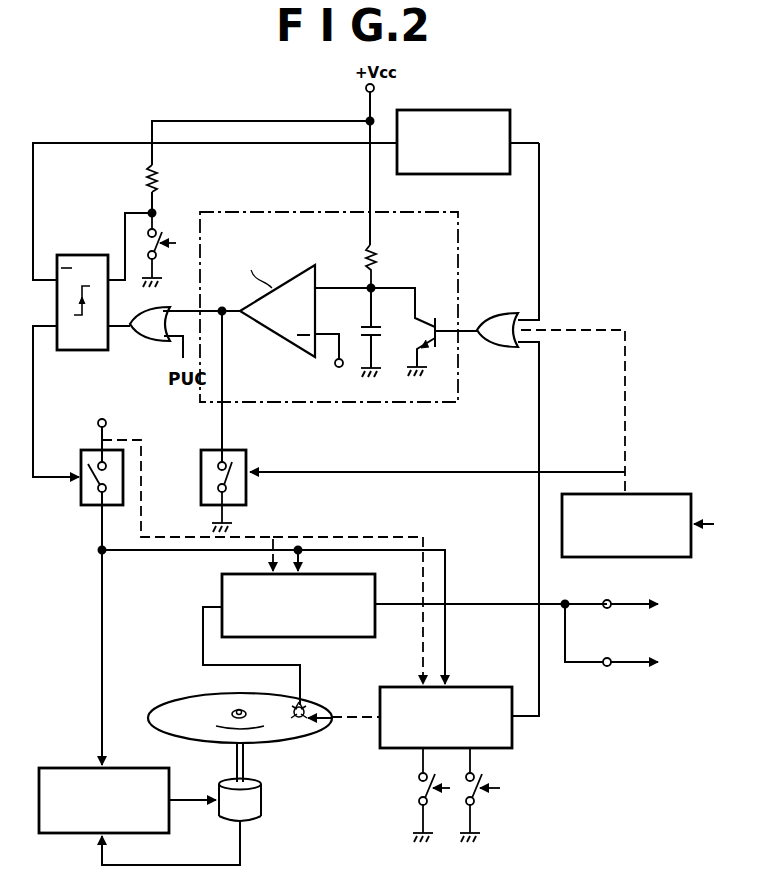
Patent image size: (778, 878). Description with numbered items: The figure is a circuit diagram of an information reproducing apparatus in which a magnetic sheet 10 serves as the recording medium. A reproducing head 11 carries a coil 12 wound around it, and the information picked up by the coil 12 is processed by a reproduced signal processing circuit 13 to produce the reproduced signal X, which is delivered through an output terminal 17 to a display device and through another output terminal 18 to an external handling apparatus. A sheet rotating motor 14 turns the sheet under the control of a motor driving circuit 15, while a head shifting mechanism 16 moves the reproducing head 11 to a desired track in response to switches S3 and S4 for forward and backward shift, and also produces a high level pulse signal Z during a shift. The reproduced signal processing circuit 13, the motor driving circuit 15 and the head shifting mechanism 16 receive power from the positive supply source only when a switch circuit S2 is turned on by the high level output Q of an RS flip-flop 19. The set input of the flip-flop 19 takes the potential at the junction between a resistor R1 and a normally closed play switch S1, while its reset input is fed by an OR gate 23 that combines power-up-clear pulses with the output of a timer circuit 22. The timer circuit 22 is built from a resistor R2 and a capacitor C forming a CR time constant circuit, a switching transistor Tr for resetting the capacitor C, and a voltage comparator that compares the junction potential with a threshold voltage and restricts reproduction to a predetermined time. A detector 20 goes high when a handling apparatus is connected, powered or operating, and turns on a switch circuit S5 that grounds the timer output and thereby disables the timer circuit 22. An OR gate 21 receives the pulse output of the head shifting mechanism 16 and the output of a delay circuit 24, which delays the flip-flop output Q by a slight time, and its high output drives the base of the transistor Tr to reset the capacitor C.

The magnetic sheet 10 is at (322, 698).
The reproducing head 11 is at (318, 722).
The coil 12 is at (300, 720).
The reproduced signal processing circuit 13 is at (350, 637).
The sheet rotating motor 14 is at (252, 822).
The motor driving circuit 15 is at (70, 768).
The head shifting mechanism 16 is at (480, 687).
The output terminal 17 is at (604, 666).
The output terminal 18 is at (604, 600).
The RS flip-flop 19 is at (75, 255).
The detector 20 is at (654, 494).
The OR gate 21 is at (497, 313).
The timer circuit 22 is at (359, 302).
The OR gate 23 is at (140, 343).
The delay circuit 24 is at (460, 110).
The play switch S1 is at (162, 252).
The switch circuit S2 is at (86, 508).
The switch S3 is at (418, 786).
The switch S4 is at (476, 800).
The switch circuit S5 is at (248, 462).
The resistor R1 is at (165, 180).
The resistor R2 is at (366, 250).
The capacitor C is at (382, 332).
The switching transistor Tr is at (428, 322).